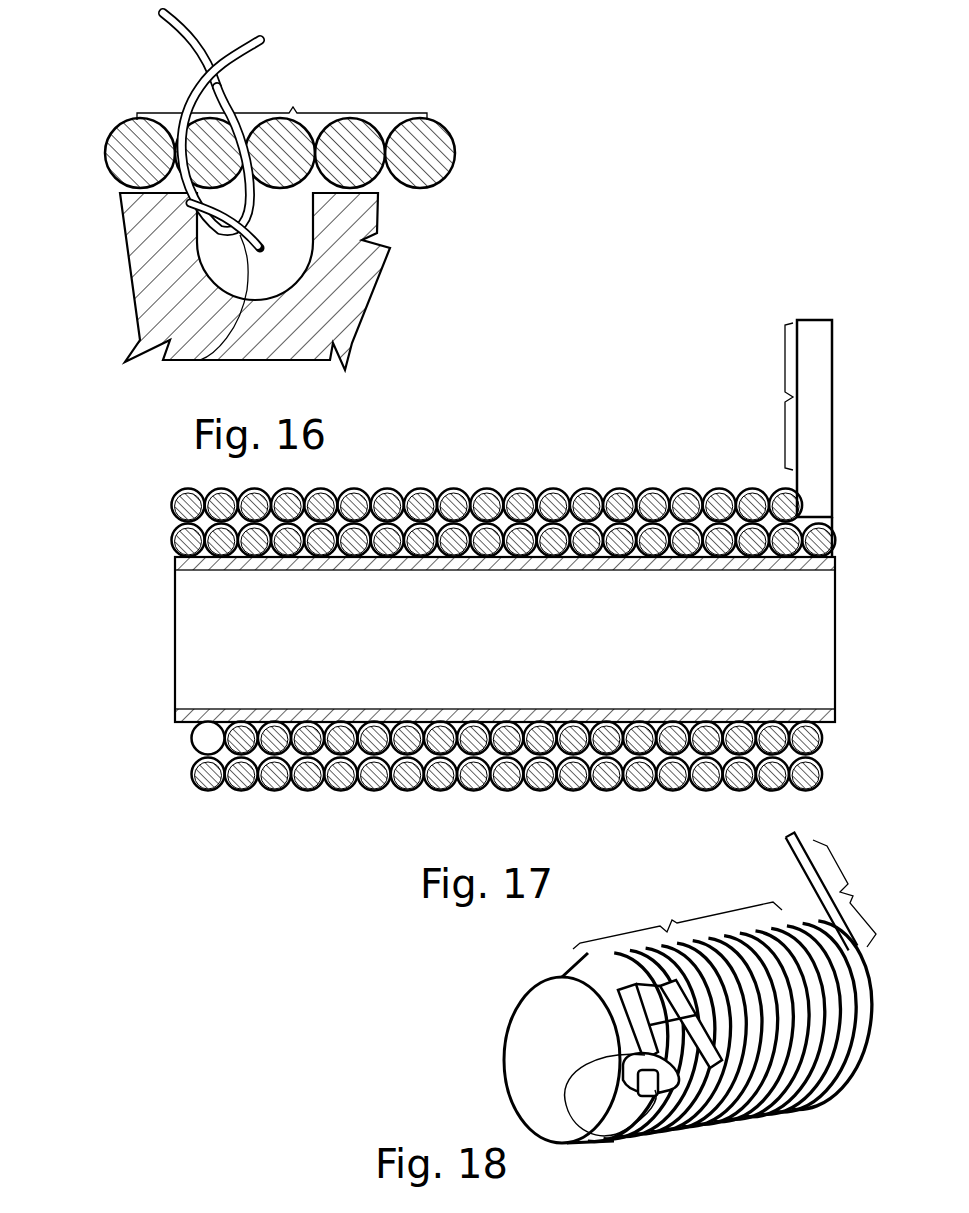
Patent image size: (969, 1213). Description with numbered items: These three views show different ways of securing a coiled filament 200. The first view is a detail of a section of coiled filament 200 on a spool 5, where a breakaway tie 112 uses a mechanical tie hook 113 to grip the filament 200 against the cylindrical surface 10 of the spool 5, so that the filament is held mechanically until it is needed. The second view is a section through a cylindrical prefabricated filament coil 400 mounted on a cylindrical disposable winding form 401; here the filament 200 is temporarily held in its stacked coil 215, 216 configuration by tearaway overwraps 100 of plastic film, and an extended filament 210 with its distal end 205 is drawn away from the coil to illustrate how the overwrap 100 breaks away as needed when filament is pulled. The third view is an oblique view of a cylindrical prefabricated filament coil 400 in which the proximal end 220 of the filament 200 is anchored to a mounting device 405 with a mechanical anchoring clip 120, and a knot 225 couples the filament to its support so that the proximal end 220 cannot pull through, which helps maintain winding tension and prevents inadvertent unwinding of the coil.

In FIG. 16, the spool 5 is at (380, 200).
In FIG. 16, the cylindrical surface 10 is at (110, 133).
In FIG. 17, the tearaway overwrap 100 is at (485, 487).
In FIG. 16, the breakaway tie 112 is at (213, 43).
In FIG. 16, the mechanical tie hook 113 is at (190, 362).
In FIG. 18, the mechanical anchoring clip 120 is at (637, 1033).
In FIG. 16, the filament 200 is at (108, 130).
In FIG. 17, the filament 200 is at (833, 393).
In FIG. 18, the filament 200 is at (792, 870).
In FIG. 17, the distal end 205 is at (813, 320).
In FIG. 18, the distal end 205 is at (790, 837).
In FIG. 17, the extended filament 210 is at (780, 398).
In FIG. 18, the extended filament 210 is at (853, 890).
In FIG. 16, the coil 215 is at (293, 110).
In FIG. 17, the coil 215 is at (823, 732).
In FIG. 17, the coil 216 is at (823, 772).
In FIG. 17, the proximal end 220 is at (190, 742).
In FIG. 18, the proximal end 220 is at (647, 1100).
In FIG. 18, the knot 225 is at (613, 1140).
In FIG. 18, the cylindrical prefabricated filament coil 400 is at (667, 925).
In FIG. 17, the cylindrical disposable winding form 401 is at (837, 588).
In FIG. 18, the mounting device 405 is at (503, 1073).